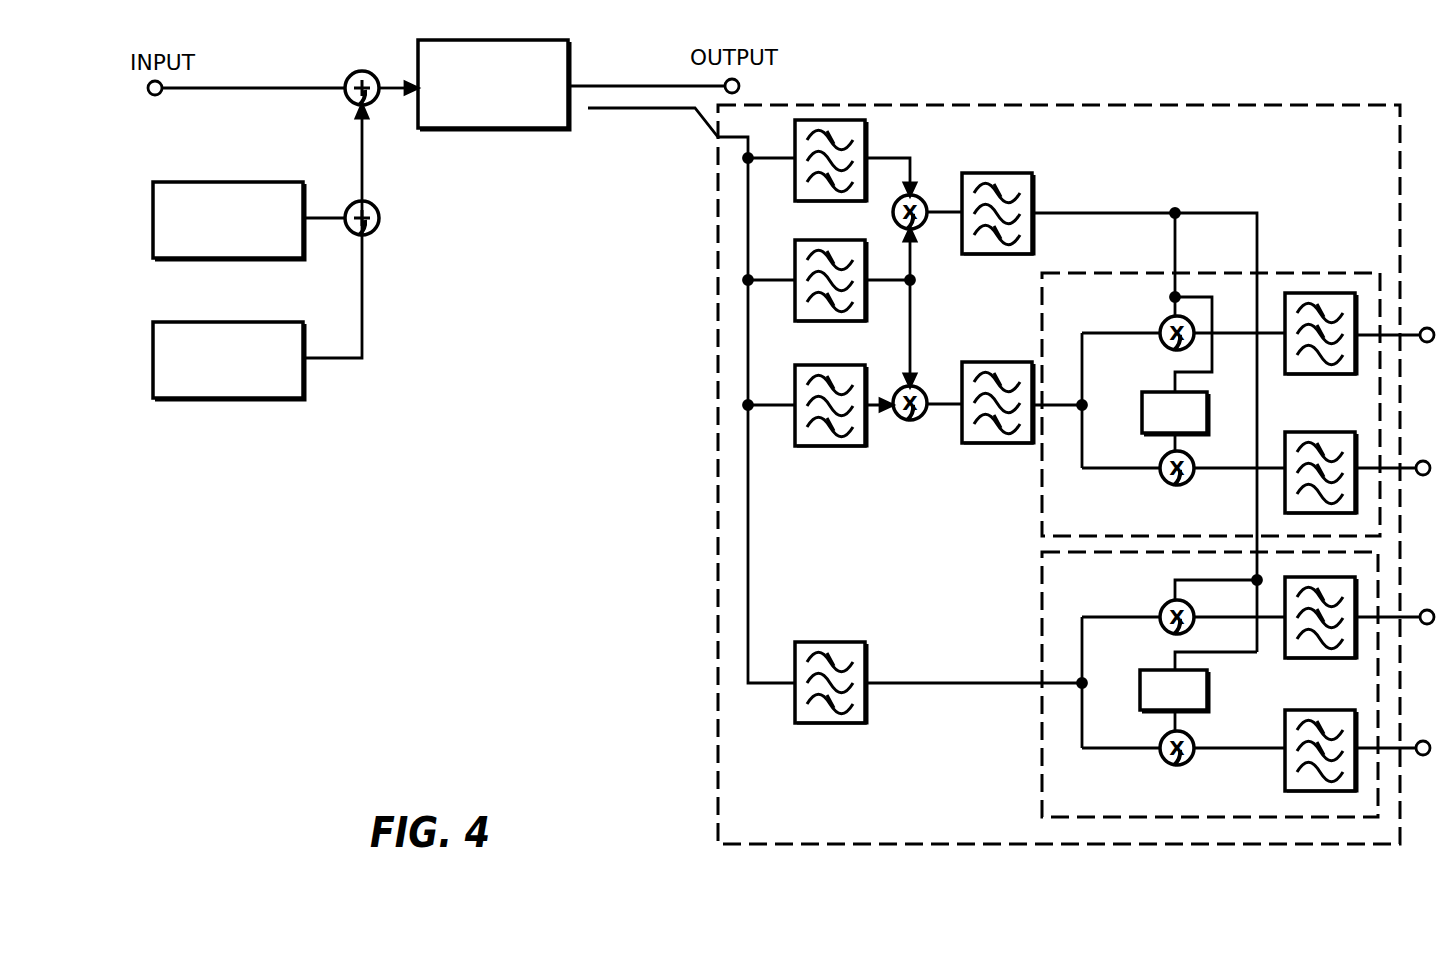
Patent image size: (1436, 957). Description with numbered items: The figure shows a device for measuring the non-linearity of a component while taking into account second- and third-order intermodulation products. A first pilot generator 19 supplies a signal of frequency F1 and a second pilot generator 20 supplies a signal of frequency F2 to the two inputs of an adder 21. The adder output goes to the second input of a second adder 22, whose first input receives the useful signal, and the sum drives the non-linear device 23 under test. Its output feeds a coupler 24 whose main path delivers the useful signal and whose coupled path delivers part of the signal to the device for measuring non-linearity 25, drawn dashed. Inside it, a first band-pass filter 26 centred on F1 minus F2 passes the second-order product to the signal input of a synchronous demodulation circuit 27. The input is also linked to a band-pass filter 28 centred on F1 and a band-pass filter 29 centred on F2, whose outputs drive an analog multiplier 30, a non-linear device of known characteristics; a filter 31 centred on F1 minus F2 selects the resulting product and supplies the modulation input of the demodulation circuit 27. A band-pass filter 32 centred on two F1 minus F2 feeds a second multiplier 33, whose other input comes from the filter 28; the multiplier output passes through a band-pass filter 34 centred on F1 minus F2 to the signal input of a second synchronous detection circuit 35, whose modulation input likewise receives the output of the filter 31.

The first pilot generator 19 is at (229, 192).
The second pilot generator 20 is at (229, 394).
The adder 21 is at (404, 227).
The second adder 22 is at (338, 64).
The non-linear device 23 is at (494, 65).
The coupler 24 is at (665, 85).
The device for measuring non-linearity 25 is at (1059, 449).
The first band-pass filter 26 is at (831, 671).
The synchronous demodulation circuit 27 is at (1203, 684).
The band-pass filter 28 is at (812, 300).
The band-pass filter 29 is at (864, 171).
The analog multiplier 30 is at (951, 177).
The filter 31 is at (1030, 225).
The band-pass filter 32 is at (812, 438).
The second multiplier 33 is at (917, 440).
The band-pass filter 34 is at (998, 393).
The second synchronous detection circuit 35 is at (1238, 374).